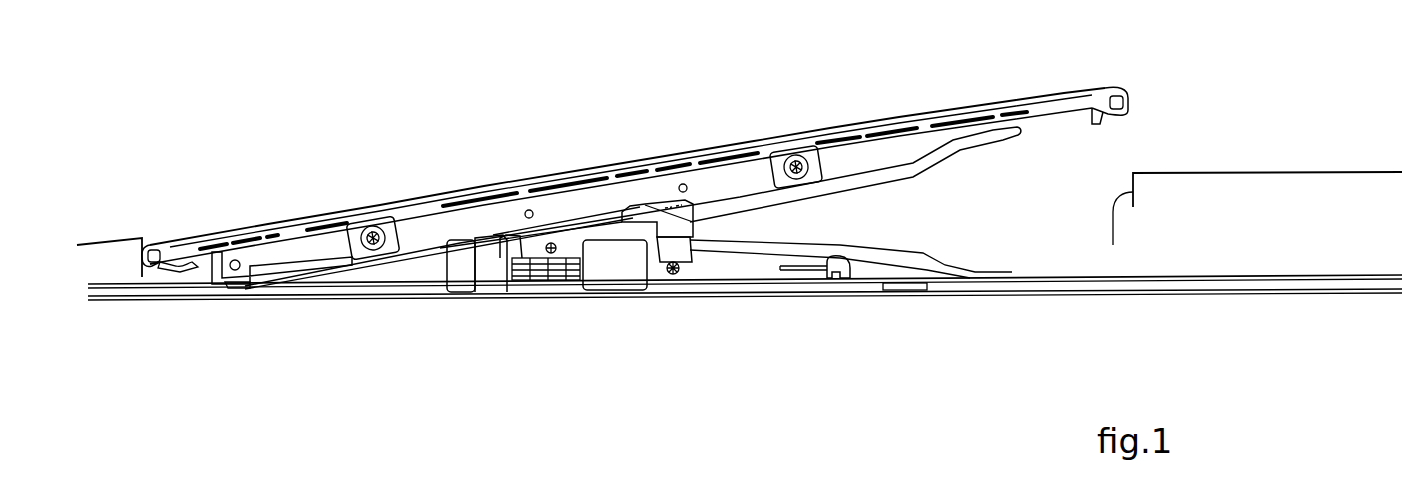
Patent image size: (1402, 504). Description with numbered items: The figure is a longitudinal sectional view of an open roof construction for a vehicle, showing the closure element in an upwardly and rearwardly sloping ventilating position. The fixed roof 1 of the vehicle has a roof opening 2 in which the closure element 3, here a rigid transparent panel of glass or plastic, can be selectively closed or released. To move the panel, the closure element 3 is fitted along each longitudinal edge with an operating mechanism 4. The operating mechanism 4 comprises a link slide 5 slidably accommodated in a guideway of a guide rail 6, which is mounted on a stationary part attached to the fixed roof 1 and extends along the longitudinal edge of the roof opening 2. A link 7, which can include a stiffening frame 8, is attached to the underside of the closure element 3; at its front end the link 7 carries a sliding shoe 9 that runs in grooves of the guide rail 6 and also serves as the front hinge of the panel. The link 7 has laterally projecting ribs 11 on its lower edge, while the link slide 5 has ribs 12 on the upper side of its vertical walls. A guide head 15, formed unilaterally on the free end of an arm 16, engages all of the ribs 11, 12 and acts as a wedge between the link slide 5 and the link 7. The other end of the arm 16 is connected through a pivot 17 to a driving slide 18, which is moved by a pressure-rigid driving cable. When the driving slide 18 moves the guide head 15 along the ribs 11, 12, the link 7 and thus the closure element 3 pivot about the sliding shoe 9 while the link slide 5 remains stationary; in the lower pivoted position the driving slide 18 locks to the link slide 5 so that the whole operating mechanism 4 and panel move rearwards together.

The fixed roof 1 is at (118, 237).
The roof opening 2 is at (147, 247).
The closure element 3 is at (482, 188).
The operating mechanism 4 is at (948, 225).
The link slide 5 is at (935, 272).
The guide rail 6 is at (1172, 283).
The link 7 is at (639, 190).
The stiffening frame 8 is at (892, 130).
The sliding shoe 9 is at (225, 292).
The ribs 11 is at (942, 158).
The ribs 12 is at (963, 272).
The guide head 15 is at (684, 233).
The arm 16 is at (620, 232).
The pivot 17 is at (540, 304).
The driving slide 18 is at (467, 292).